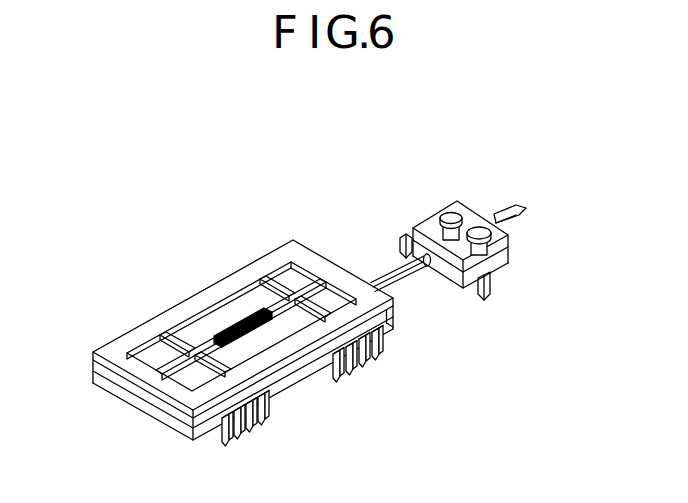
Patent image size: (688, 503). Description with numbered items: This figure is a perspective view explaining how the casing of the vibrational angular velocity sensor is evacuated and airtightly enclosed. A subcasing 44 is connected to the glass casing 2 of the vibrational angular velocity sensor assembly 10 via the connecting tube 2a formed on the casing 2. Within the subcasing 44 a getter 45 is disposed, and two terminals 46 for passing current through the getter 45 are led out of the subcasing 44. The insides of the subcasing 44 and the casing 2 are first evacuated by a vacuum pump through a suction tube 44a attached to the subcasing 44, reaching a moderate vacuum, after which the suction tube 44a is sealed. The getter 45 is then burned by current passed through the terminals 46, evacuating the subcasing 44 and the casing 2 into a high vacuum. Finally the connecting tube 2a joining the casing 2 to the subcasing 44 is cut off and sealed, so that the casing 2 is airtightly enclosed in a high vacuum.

The vibrational angular velocity sensor assembly 10 is at (233, 268).
The glass casing 2 is at (403, 329).
The connecting tube 2a is at (401, 282).
The subcasing 44 is at (516, 265).
The suction tube 44a is at (524, 207).
The getter 45 is at (478, 228).
The terminals 46 is at (401, 237).